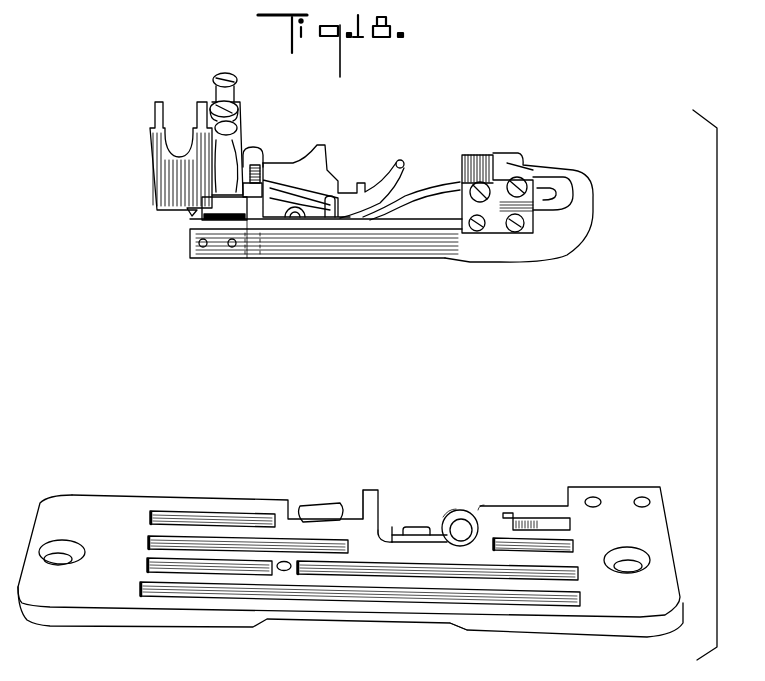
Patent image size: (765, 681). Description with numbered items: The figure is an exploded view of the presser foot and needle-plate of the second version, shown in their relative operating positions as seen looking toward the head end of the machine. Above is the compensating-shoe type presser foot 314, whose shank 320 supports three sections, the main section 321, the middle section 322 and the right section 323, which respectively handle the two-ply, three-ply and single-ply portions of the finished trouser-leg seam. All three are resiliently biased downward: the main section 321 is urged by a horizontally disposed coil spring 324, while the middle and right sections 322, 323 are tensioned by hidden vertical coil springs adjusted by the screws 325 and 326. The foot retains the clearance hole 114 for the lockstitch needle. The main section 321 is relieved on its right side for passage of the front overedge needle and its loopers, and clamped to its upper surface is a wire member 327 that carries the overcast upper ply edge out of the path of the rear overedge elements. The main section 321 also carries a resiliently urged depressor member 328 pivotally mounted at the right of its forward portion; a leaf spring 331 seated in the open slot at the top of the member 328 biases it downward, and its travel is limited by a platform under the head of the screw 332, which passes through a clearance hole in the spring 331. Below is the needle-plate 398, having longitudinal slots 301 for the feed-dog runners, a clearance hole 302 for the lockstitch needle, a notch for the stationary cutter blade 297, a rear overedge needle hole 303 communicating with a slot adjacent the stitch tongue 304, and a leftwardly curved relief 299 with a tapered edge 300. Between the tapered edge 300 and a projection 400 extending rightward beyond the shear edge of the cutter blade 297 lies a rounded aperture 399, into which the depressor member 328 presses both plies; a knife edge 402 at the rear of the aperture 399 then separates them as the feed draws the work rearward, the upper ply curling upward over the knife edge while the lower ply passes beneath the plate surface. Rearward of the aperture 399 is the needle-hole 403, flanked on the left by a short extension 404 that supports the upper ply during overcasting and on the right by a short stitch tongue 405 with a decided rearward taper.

The clearance hole 114 is at (284, 220).
The presser foot 314 is at (190, 240).
The shank 320 is at (150, 181).
The main section 321 is at (360, 247).
The middle section 322 is at (328, 216).
The right section 323 is at (331, 152).
The coil spring 324 is at (287, 218).
The screw 325 is at (238, 106).
The screw 326 is at (233, 78).
The wire member 327 is at (432, 183).
The depressor member 328 is at (507, 162).
The leaf spring 331 is at (477, 153).
The screw 332 is at (472, 193).
The stationary cutter blade 297 is at (542, 517).
The leftwardly curved relief 299 is at (383, 532).
The tapered edge 300 is at (435, 537).
The longitudinal slots 301 is at (190, 594).
The clearance hole 302 is at (278, 561).
The rear needle hole 303 is at (348, 516).
The stitch tongue 304 is at (308, 505).
The needle-plate 398 is at (603, 636).
The rounded aperture 399 is at (468, 528).
The projection 400 is at (479, 504).
The knife edge 402 is at (450, 547).
The needle-hole 403 is at (451, 509).
The short extension 404 is at (392, 527).
The short stitch tongue 405 is at (409, 523).